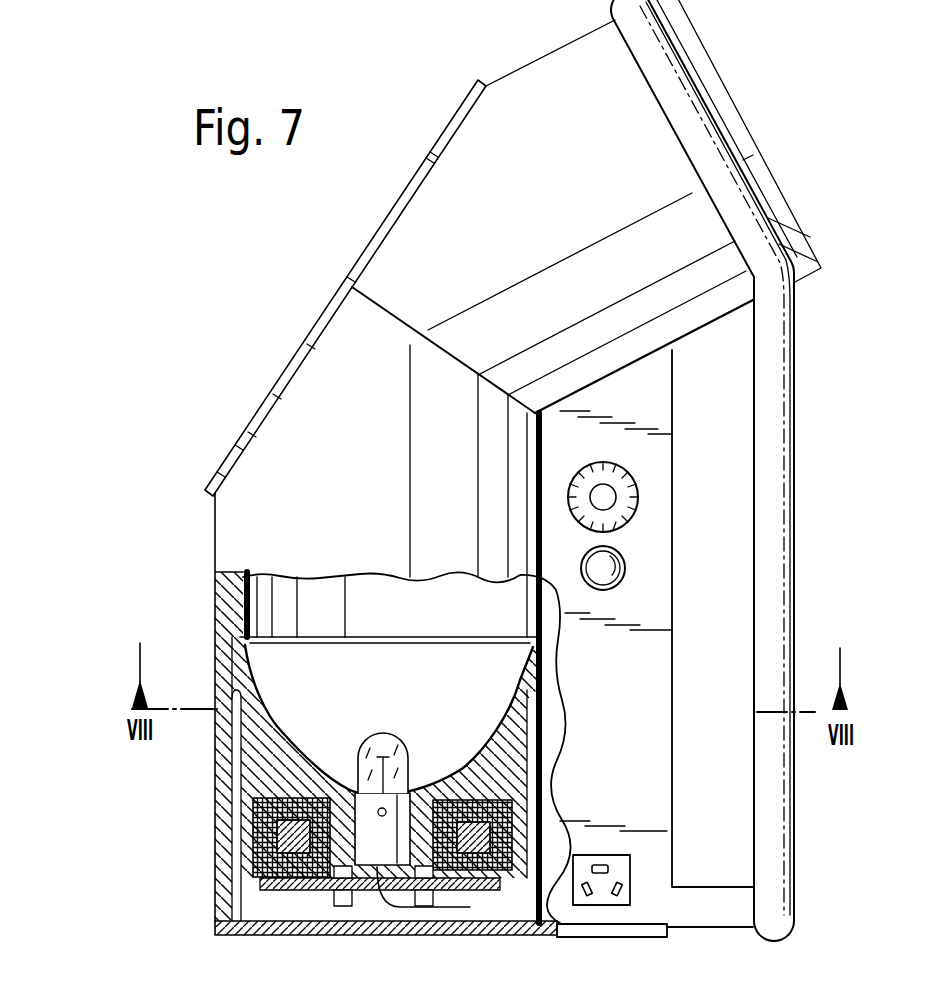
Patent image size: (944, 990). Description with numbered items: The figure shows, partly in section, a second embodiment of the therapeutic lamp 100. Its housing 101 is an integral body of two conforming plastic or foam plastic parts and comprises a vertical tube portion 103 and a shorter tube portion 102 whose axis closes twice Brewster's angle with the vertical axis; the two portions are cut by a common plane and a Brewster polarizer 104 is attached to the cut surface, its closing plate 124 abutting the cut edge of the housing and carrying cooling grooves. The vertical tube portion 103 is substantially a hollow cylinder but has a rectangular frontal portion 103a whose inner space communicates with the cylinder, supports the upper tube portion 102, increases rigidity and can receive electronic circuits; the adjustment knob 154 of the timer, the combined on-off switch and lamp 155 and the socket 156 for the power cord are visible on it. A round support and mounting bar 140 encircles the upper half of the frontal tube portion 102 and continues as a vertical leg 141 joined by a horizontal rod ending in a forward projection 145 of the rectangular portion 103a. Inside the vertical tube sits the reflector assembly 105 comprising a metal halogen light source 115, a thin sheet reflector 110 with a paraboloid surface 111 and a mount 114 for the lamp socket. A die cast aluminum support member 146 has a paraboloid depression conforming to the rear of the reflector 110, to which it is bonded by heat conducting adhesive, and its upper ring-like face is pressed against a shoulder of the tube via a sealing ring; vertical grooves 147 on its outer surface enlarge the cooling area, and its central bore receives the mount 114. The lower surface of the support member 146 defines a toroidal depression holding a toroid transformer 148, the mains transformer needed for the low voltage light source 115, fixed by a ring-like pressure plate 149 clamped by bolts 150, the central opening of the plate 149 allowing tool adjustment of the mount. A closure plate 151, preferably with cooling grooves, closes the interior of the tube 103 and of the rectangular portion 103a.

The therapeutic lamp 100 is at (265, 257).
The housing 101 is at (230, 802).
The shorter tube portion 102 is at (690, 312).
The vertical tube portion 103 is at (232, 527).
The rectangular frontal portion 103a is at (655, 680).
The Brewster polarizer 104 is at (272, 374).
The reflector assembly 105 is at (378, 622).
The reflector 110 is at (496, 718).
The paraboloid surface 111 is at (280, 733).
The mount 114 is at (372, 852).
The metal halogen light source 115 is at (400, 740).
The closing plate 124 is at (432, 158).
The support and mounting bar 140 is at (706, 118).
The vertical leg 141 is at (782, 540).
The forward projection 145 is at (713, 912).
The support member 146 is at (254, 762).
The vertical grooves 147 is at (236, 887).
The toroid transformer 148 is at (255, 846).
The ring-like pressure plate 149 is at (467, 910).
The bolts 150 is at (426, 930).
The closure plate 151 is at (590, 928).
The adjustment knob 154 is at (639, 488).
The combined on-off switch and lamp 155 is at (626, 566).
The socket 156 is at (625, 880).